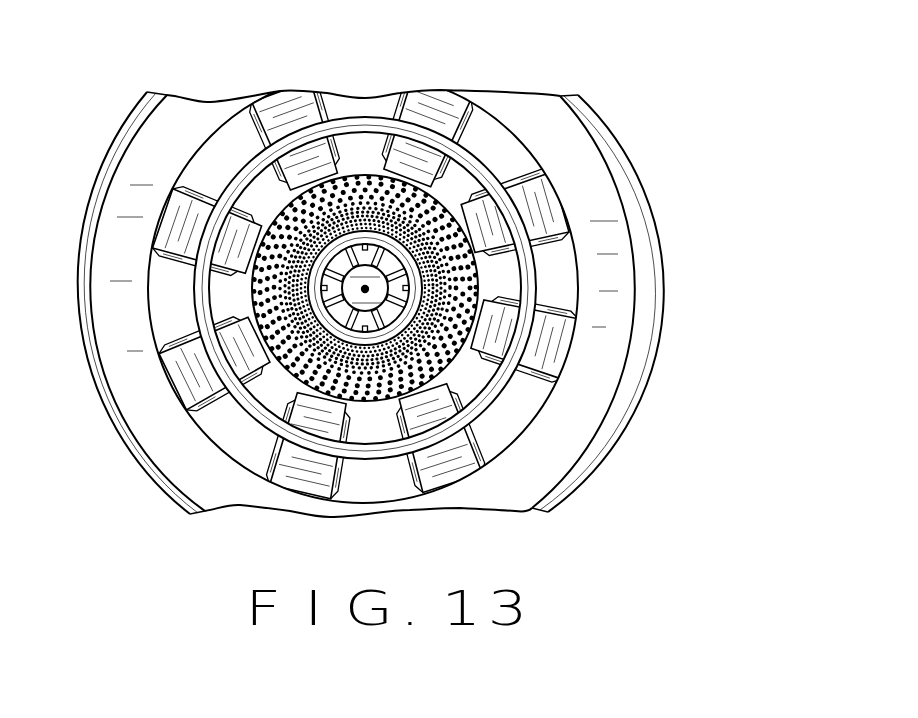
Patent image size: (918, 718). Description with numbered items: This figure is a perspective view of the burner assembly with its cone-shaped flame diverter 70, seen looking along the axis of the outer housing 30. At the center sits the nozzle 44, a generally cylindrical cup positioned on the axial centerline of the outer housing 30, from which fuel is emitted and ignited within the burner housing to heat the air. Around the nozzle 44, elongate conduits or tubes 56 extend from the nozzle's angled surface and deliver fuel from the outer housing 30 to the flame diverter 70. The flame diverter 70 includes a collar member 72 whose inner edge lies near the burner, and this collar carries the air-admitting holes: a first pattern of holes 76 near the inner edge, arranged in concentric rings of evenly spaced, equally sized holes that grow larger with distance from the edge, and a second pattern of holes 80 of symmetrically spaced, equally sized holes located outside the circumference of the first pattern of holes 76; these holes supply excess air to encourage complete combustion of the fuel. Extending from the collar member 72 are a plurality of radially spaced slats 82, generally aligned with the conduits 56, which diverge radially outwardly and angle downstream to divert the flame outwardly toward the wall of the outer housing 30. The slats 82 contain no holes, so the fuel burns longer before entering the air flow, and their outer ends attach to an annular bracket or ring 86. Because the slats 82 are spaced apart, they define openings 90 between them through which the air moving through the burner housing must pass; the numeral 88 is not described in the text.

The outer housing 30 is at (610, 428).
The nozzle 44 is at (349, 283).
The conduit 56 is at (327, 177).
The flame diverter 70 is at (584, 271).
The collar member 72 is at (297, 233).
The first pattern of holes 76 is at (365, 176).
The second pattern of holes 80 is at (400, 177).
The slat 82 is at (530, 203).
The annular bracket or ring 86 is at (570, 319).
The outer wall 88 is at (571, 369).
The opening 90 is at (493, 147).